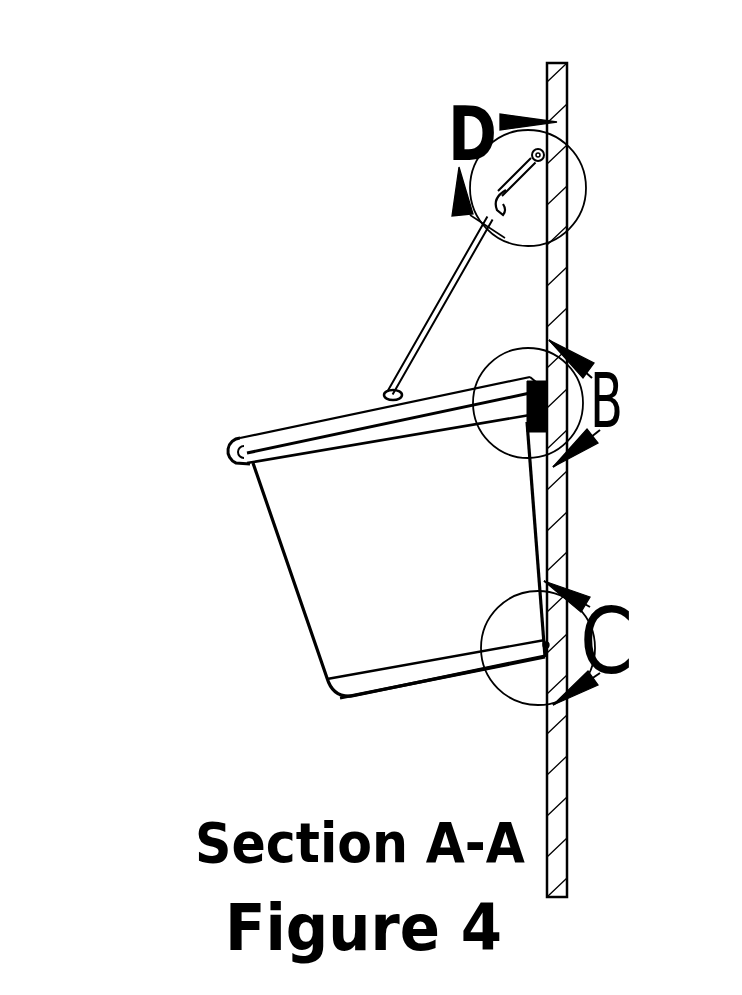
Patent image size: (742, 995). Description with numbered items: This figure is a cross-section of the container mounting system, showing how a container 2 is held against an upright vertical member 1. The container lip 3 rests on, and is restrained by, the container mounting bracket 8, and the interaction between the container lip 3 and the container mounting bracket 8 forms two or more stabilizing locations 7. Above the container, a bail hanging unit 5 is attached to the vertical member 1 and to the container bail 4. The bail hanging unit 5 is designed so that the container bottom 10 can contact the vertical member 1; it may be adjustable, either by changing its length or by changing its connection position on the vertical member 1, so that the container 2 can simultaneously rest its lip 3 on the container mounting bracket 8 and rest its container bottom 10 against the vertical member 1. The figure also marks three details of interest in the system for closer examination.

The vertical member 1 is at (560, 790).
The container 2 is at (305, 628).
The container lip 3 is at (233, 458).
The container bail 4 is at (443, 307).
The bail hanging unit 5 is at (497, 195).
The stabilizing locations 7 is at (540, 407).
The container mounting bracket 8 is at (527, 418).
The container bottom 10 is at (396, 699).